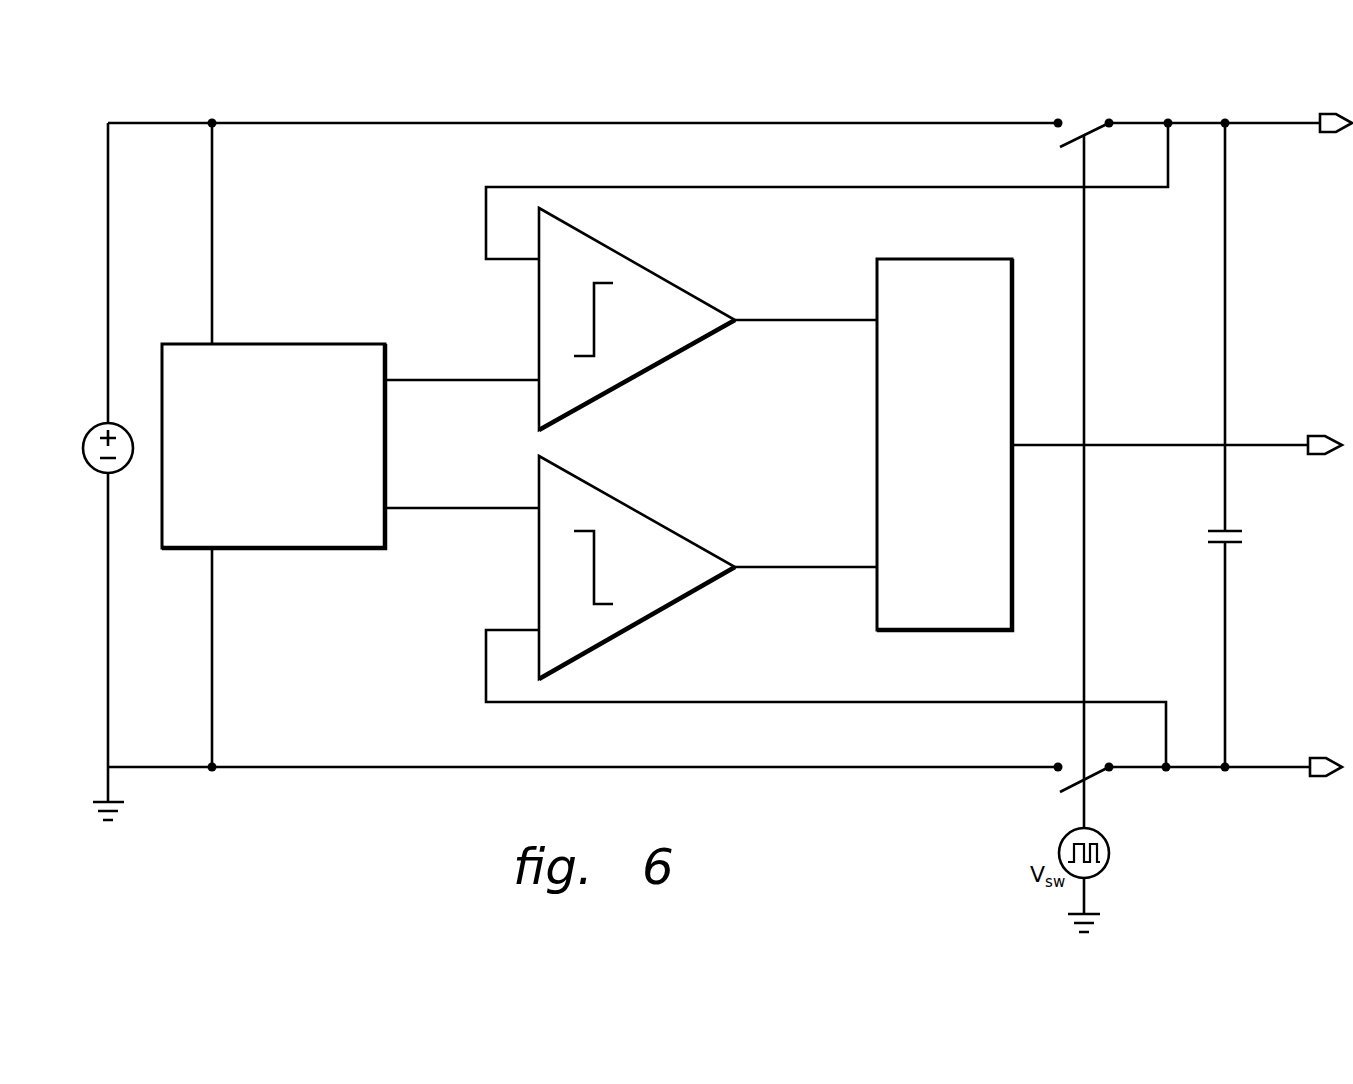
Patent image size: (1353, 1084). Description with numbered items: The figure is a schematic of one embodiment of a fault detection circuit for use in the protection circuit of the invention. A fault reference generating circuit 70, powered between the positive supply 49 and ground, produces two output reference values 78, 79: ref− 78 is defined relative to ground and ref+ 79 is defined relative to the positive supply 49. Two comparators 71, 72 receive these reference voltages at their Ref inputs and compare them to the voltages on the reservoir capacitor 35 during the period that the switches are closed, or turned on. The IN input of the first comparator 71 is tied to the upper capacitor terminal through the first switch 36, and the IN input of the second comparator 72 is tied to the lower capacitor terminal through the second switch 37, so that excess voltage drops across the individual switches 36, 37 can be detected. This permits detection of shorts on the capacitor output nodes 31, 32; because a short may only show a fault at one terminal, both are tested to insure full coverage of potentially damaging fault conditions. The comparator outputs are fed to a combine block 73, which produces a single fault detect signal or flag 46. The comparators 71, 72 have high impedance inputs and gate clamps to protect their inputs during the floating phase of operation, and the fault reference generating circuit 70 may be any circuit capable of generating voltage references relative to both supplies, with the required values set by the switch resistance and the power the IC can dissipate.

The capacitor output node 31 is at (1274, 124).
The capacitor output node 32 is at (1274, 768).
The reservoir capacitor 35 is at (1206, 548).
The switch 36 is at (1052, 136).
The switch 37 is at (1050, 782).
The fault detect signal 46 is at (1134, 445).
The positive supply 49 is at (92, 478).
The fault reference generating circuit 70 is at (280, 553).
The comparator 71 is at (700, 300).
The comparator 72 is at (666, 532).
The combine circuit 73 is at (877, 438).
The reference value ref− 78 is at (447, 510).
The reference value ref+ 79 is at (404, 380).